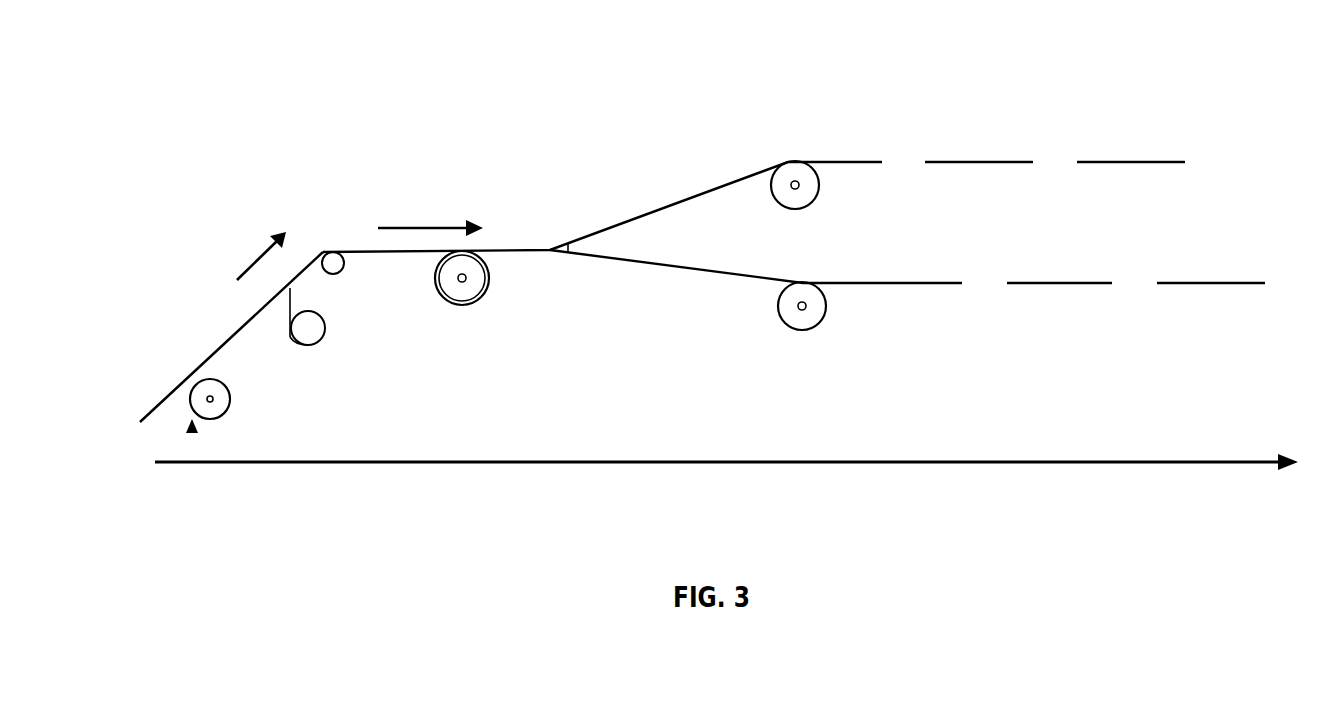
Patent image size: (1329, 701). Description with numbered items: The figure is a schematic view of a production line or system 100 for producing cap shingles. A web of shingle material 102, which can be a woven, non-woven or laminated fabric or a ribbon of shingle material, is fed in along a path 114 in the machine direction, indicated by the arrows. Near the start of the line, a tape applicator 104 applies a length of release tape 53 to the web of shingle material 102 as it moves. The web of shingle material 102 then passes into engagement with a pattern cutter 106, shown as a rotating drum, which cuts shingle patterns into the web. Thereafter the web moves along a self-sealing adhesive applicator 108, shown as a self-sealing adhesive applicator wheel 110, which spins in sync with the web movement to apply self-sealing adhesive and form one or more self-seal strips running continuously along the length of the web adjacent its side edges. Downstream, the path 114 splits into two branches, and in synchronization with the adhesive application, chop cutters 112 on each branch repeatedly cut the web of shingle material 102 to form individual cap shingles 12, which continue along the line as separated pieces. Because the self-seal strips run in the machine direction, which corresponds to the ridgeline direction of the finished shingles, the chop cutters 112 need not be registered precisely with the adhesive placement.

The production line or system 100 is at (741, 97).
The web of shingle material 102 is at (233, 333).
The release tape 53 is at (291, 289).
The tape applicator 104 is at (313, 340).
The pattern cutter 106 is at (460, 305).
The self-sealing adhesive applicator 108 is at (192, 428).
The self-sealing adhesive applicator wheel 110 is at (230, 400).
The chop cutters 112 is at (817, 172).
The path 114 is at (257, 256).
The cut composite pieces 12 is at (972, 162).